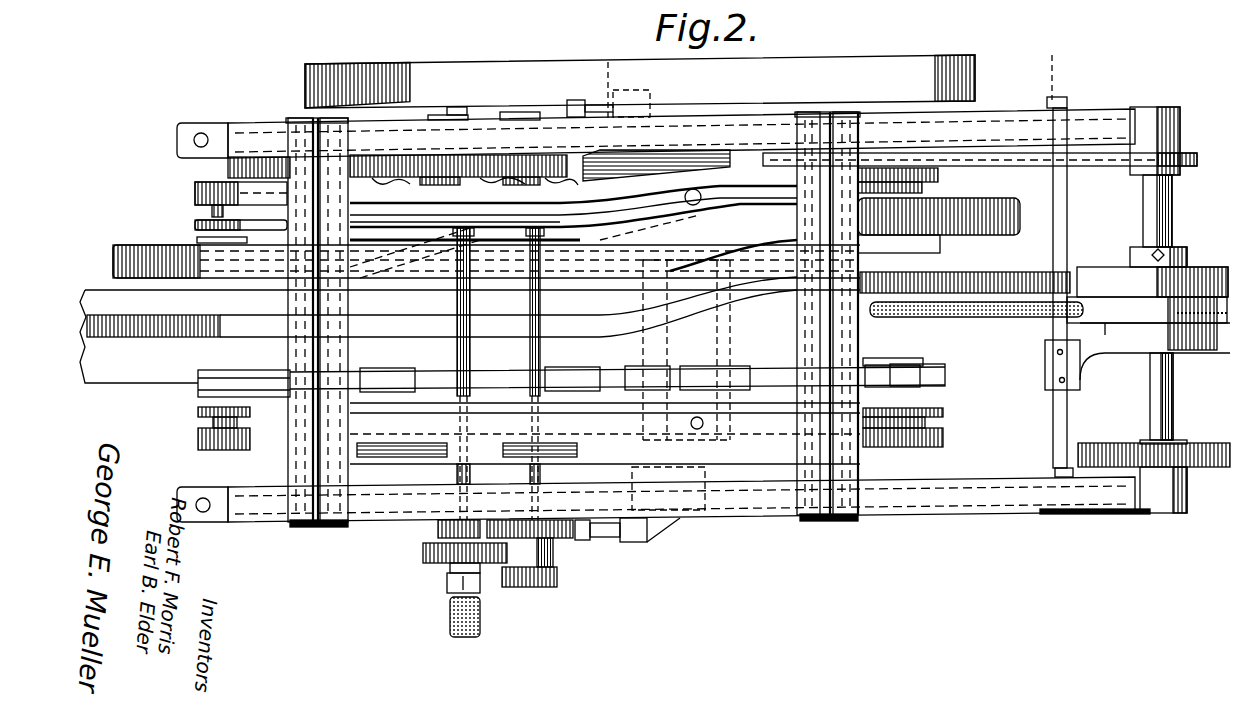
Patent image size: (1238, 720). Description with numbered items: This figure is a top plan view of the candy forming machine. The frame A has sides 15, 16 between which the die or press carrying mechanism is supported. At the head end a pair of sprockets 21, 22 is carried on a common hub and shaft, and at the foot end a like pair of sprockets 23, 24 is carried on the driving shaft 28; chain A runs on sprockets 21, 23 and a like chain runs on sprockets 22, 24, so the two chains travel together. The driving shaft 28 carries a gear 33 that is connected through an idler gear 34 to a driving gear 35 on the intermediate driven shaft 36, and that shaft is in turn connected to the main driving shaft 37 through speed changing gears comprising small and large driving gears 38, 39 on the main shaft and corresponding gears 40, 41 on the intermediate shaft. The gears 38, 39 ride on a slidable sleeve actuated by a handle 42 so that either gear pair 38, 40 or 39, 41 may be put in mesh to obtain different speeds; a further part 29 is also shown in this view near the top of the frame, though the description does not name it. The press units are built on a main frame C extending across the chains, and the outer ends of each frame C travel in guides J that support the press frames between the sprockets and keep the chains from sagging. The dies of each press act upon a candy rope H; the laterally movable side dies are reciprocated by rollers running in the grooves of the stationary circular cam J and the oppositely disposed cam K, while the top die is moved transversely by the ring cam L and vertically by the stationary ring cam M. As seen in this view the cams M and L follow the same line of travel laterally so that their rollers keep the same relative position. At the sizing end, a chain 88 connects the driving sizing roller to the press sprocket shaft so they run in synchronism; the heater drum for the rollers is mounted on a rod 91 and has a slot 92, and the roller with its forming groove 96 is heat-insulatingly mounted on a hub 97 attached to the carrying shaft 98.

The frame side 15 is at (380, 523).
The frame side 16 is at (380, 140).
The head sprocket 21 is at (946, 375).
The head sprocket 22 is at (945, 247).
The foot sprocket 23 is at (200, 390).
The foot sprocket 24 is at (200, 238).
The driving shaft 28 is at (302, 527).
The bracket 29 is at (449, 108).
The gear 33 is at (262, 157).
The idler gear 34 is at (416, 155).
The driving gear 35 is at (574, 159).
The intermediate driven shaft 36 is at (541, 353).
The main driving shaft 37 is at (471, 353).
The small driving gear 38 is at (438, 527).
The large driving gear 39 is at (425, 557).
The gear 40 is at (560, 541).
The gear 41 is at (558, 581).
The handle 42 is at (450, 613).
The chain 88 is at (1095, 168).
The rod 91 is at (1068, 414).
The slot 92 is at (1178, 355).
The forming groove 96 is at (1195, 350).
The hub 97 is at (1187, 257).
The carrying shaft 98 is at (1160, 391).
The frame A is at (945, 366).
The press main frame C is at (735, 336).
The candy rope H is at (990, 317).
The stationary circular cam J is at (938, 175).
The cam K is at (945, 440).
The ring cam L is at (1016, 211).
The stationary ring cam M is at (1010, 274).